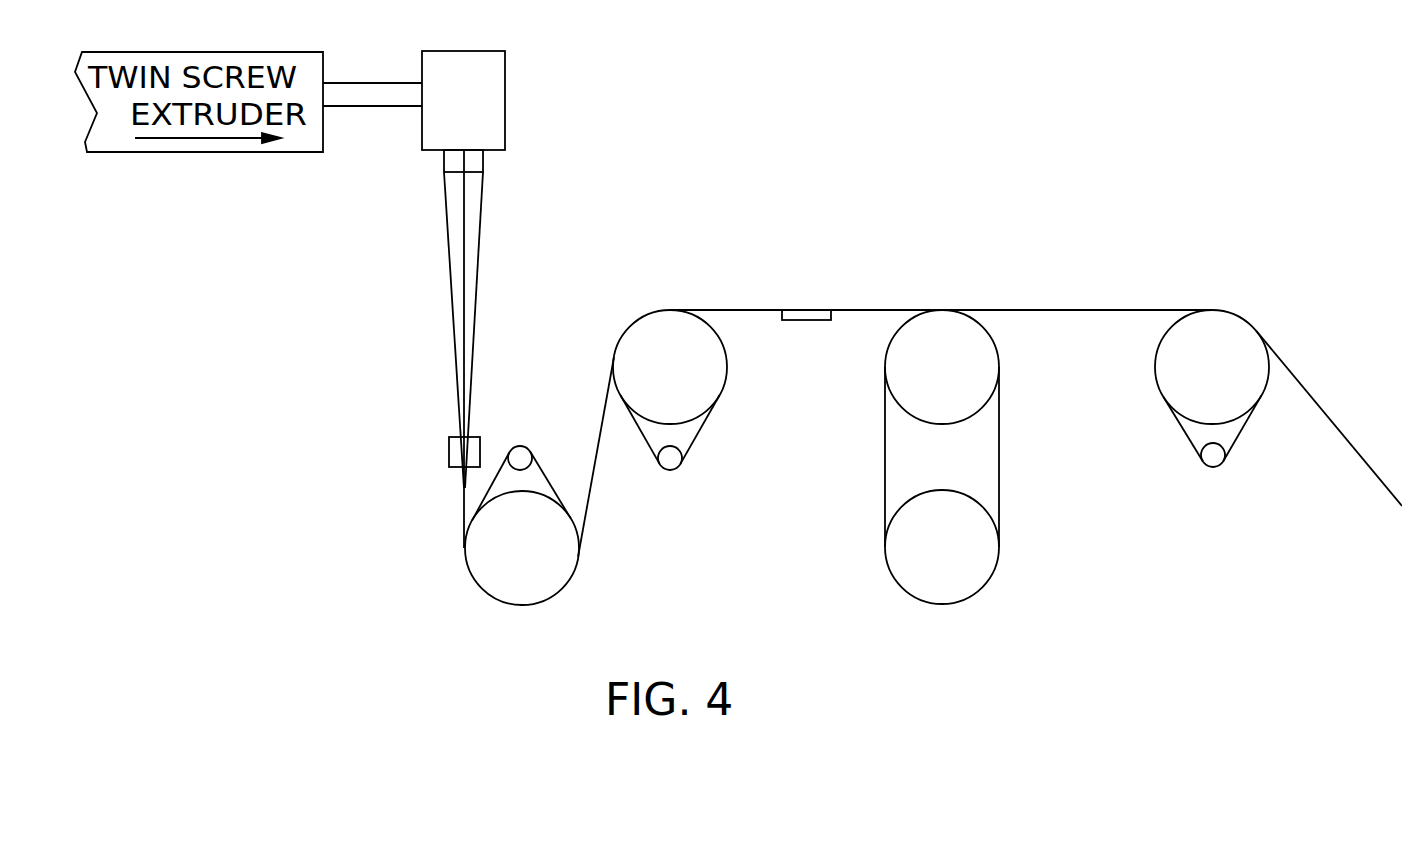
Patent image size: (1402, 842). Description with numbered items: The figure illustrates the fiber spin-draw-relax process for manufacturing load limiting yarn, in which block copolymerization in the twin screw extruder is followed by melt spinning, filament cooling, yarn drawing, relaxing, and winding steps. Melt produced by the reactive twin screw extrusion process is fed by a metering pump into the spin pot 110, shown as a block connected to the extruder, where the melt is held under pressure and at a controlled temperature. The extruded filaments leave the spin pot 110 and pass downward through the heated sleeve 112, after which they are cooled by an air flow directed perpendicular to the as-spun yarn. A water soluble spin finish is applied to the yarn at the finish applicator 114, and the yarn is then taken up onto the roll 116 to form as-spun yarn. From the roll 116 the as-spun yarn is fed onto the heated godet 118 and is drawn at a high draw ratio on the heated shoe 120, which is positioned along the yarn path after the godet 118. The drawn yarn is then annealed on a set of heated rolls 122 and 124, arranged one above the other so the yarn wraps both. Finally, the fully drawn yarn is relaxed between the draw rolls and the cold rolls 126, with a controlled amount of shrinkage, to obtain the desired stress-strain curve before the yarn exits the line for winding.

The spin pot 110 is at (493, 122).
The heated sleeve 112 is at (464, 160).
The spin finish application point 114 is at (449, 452).
The roll 116 is at (495, 566).
The godet 118 is at (644, 387).
The heated shoe 120 is at (802, 320).
The annealing roll 122 is at (915, 388).
The annealing roll 124 is at (915, 568).
The cold rolls 126 is at (1184, 387).